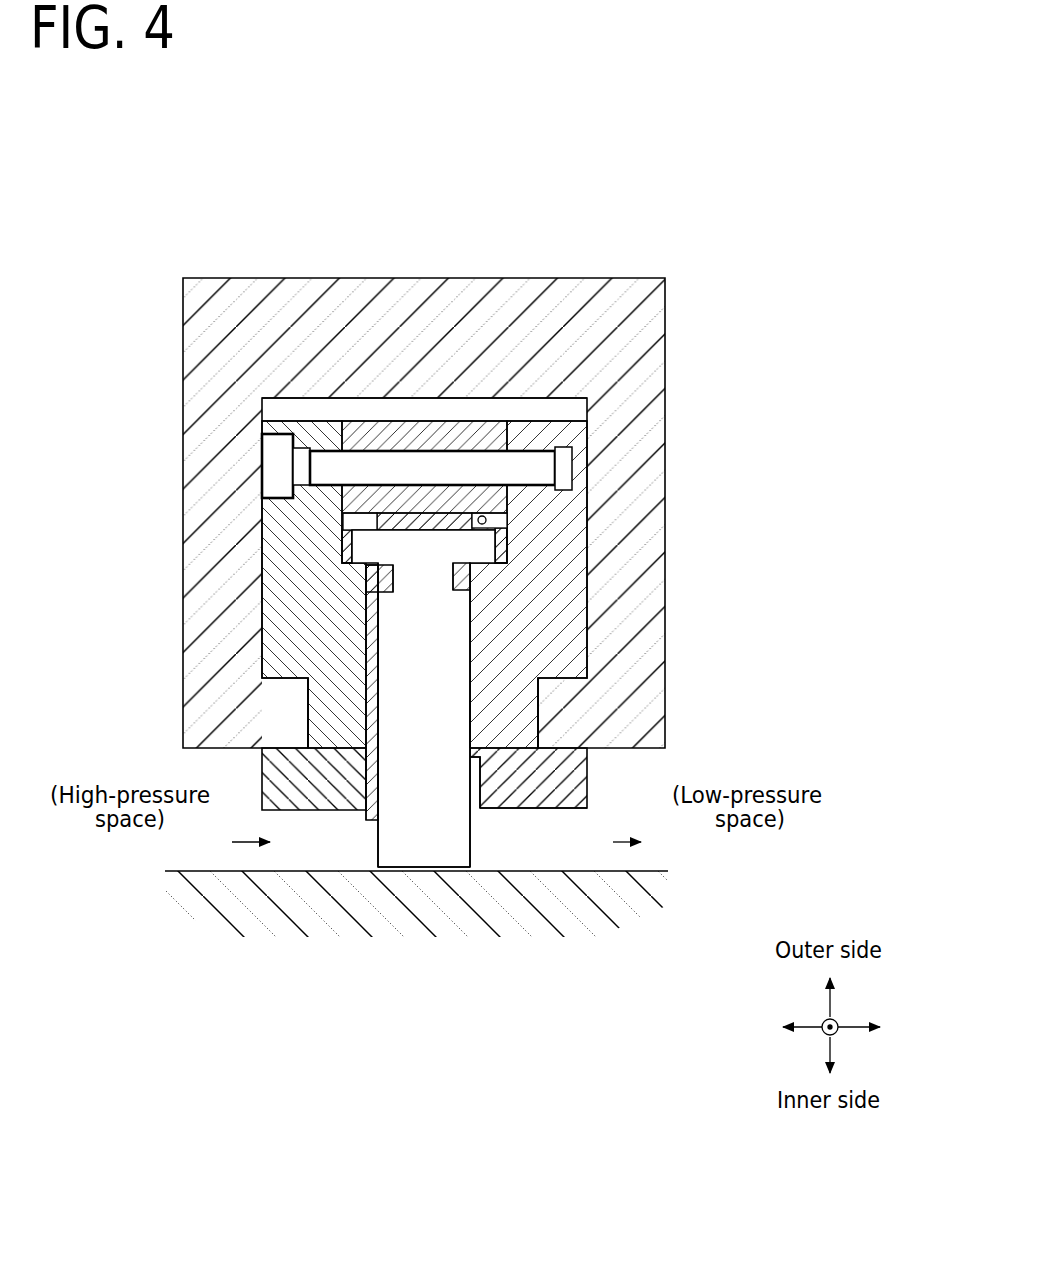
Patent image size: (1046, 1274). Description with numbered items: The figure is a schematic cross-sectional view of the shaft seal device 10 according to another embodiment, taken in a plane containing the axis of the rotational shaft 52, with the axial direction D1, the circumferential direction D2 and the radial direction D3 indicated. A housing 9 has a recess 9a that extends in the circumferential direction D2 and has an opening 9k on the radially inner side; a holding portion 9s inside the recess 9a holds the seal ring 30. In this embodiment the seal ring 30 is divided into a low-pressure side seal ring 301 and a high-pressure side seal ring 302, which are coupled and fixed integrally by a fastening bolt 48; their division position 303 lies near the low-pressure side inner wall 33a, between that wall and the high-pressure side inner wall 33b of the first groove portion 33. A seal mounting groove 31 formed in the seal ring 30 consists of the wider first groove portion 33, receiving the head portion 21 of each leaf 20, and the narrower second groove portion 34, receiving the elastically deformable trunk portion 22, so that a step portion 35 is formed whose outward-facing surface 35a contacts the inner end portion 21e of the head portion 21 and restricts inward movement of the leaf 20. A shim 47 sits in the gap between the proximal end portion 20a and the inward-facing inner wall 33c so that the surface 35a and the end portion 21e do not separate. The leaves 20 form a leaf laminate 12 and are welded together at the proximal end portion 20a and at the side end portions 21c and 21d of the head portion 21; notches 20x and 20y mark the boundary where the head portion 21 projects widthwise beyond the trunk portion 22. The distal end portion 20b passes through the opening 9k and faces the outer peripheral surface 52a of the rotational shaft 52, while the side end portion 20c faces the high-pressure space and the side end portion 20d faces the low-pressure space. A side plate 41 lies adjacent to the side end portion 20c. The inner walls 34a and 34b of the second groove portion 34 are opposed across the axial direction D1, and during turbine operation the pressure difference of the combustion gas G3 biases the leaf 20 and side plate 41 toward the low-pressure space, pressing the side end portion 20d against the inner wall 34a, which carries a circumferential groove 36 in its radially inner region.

The shaft seal device 10 is at (663, 176).
The housing 9 is at (668, 300).
The recess 9a is at (569, 405).
The holding portion 9s is at (312, 708).
The opening 9k is at (532, 757).
The division position 303 is at (345, 421).
The shim 47 is at (445, 507).
The inner wall 33c is at (482, 515).
The fastening bolt 48 is at (520, 462).
The first groove portion 33 is at (272, 470).
The seal mounting groove 31 is at (424, 627).
The head portion 21 is at (344, 516).
The side end portion 21c is at (343, 549).
The side end portion 21d is at (509, 541).
The inner end portion 21e is at (366, 592).
The inner wall 33a is at (508, 517).
The inner wall 33b is at (368, 534).
The high-pressure side seal ring 302 is at (258, 577).
The low-pressure side seal ring 301 is at (591, 603).
The seal ring 30 is at (424, 584).
The surface 35a is at (364, 566).
The step portion 35 is at (418, 577).
The leaf 20 is at (376, 869).
The leaf laminate 12 is at (423, 698).
The proximal end portion 20a is at (360, 507).
The distal end portion 20b is at (405, 869).
The side end portion 20c is at (372, 832).
The side end portion 20d is at (471, 860).
The notch 20x is at (394, 586).
The notch 20y is at (453, 580).
The second groove portion 34 is at (363, 818).
The inner wall 34a is at (469, 733).
The inner wall 34b is at (379, 674).
The side plate 41 is at (364, 703).
The trunk portion 22 is at (462, 706).
The groove 36 is at (474, 810).
The rotational shaft 52 is at (670, 888).
The outer peripheral surface 52a is at (668, 860).
The combustion gas G3 is at (232, 842).
The axial direction D1 is at (838, 1020).
The circumferential direction D2 is at (822, 1036).
The radial direction D3 is at (826, 1004).